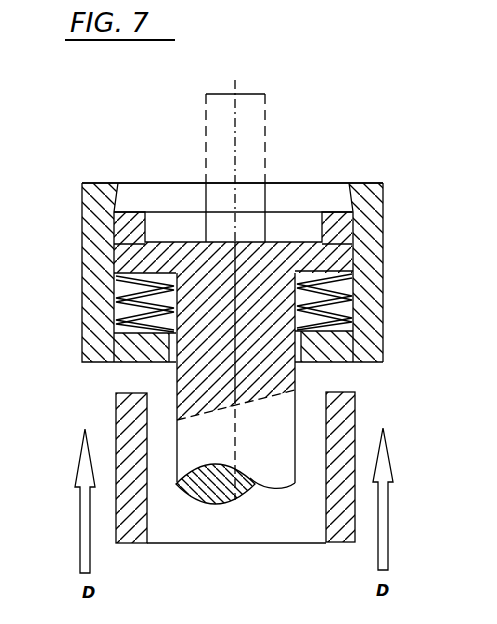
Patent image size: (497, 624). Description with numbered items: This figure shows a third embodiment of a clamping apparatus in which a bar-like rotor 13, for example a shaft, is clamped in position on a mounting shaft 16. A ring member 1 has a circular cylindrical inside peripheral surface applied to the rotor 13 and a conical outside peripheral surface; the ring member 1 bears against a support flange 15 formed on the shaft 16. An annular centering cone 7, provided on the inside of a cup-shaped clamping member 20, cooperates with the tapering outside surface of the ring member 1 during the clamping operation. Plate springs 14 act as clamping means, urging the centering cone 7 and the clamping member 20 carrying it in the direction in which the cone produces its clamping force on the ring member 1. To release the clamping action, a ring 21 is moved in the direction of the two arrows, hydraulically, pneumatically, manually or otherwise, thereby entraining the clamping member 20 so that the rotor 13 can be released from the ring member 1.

The ring member 1 is at (305, 190).
The annular centering cone 7 is at (361, 190).
The rotor 13 is at (250, 116).
The plate springs 14 is at (342, 289).
The support flange 15 is at (130, 229).
The mounting shaft 16 is at (275, 451).
The clamping member 20 is at (366, 250).
The ring 21 is at (355, 393).